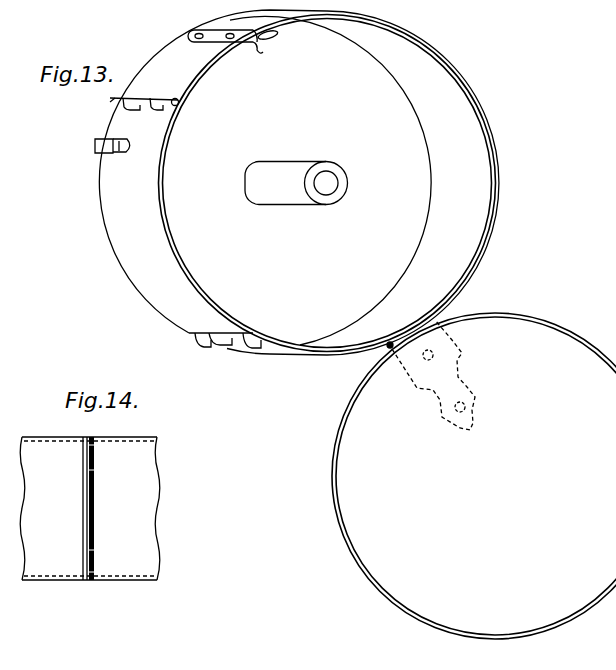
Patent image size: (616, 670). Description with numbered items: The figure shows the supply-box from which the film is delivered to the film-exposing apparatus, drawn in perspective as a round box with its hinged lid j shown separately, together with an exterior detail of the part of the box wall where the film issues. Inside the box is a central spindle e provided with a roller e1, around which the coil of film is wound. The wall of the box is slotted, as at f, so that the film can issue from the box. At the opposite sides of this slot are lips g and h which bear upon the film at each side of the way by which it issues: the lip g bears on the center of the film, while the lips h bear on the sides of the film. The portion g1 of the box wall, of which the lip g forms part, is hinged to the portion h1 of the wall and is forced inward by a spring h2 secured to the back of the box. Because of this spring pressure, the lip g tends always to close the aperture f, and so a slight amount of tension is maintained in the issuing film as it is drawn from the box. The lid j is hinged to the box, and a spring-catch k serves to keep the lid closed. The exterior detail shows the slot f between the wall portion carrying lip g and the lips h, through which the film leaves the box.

In FIG. 13, the central spindle e is at (334, 178).
In FIG. 13, the roller e1 is at (291, 164).
In FIG. 13, the slot f is at (255, 336).
In FIG. 14, the slot f is at (97, 508).
In FIG. 13, the lip g is at (226, 346).
In FIG. 14, the lip g is at (82, 502).
In FIG. 13, the portion of the wall of the box g1 is at (299, 182).
In FIG. 13, the lips h is at (200, 348).
In FIG. 14, the lips h is at (95, 455).
In FIG. 13, the portion of the wall h1 is at (144, 82).
In FIG. 13, the spring h2 is at (95, 145).
In FIG. 13, the hinged lid j is at (474, 476).
In FIG. 13, the spring-catch k is at (252, 43).